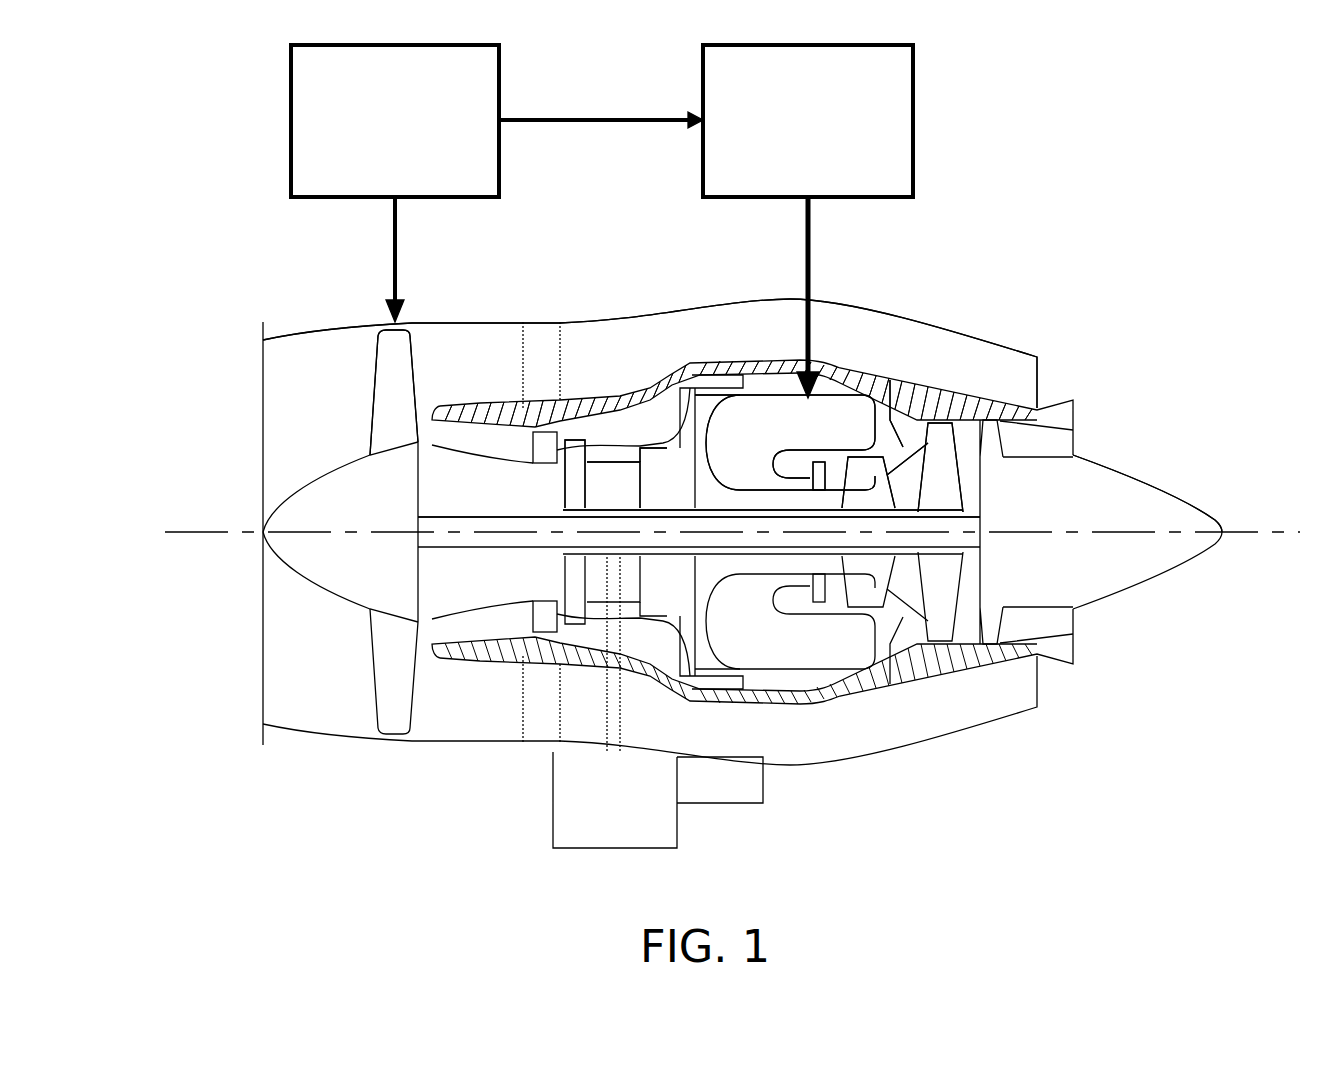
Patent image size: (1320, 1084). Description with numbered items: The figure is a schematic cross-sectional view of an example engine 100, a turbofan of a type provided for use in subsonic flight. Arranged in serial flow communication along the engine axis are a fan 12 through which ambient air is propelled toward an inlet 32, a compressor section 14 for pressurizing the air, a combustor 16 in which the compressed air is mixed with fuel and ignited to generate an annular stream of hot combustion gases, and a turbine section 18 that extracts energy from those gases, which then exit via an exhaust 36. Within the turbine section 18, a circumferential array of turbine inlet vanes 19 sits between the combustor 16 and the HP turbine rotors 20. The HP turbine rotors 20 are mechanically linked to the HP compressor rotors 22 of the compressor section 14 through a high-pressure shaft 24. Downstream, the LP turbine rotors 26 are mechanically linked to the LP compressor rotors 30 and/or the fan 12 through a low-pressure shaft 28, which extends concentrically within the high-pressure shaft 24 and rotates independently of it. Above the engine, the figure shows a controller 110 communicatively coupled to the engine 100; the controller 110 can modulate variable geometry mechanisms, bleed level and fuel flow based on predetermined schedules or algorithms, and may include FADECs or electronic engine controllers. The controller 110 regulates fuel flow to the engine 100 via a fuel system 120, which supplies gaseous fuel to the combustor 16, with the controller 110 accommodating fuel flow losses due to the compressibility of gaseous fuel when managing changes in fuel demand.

The engine 100 is at (922, 261).
The controller 110 is at (368, 163).
The fuel system 120 is at (837, 184).
The fan 12 is at (392, 665).
The compressor section 14 is at (610, 445).
The combustor 16 is at (790, 410).
The turbine section 18 is at (894, 640).
The turbine inlet vanes 19 is at (819, 460).
The HP turbine rotor 20 is at (875, 483).
The HP compressor rotor 22 is at (672, 460).
The high-pressure shaft 24 is at (718, 508).
The LP turbine rotor 26 is at (950, 470).
The low-pressure shaft 28 is at (462, 552).
The LP compressor rotor 30 is at (575, 457).
The inlet 32 is at (320, 412).
The exhaust 36 is at (1062, 446).